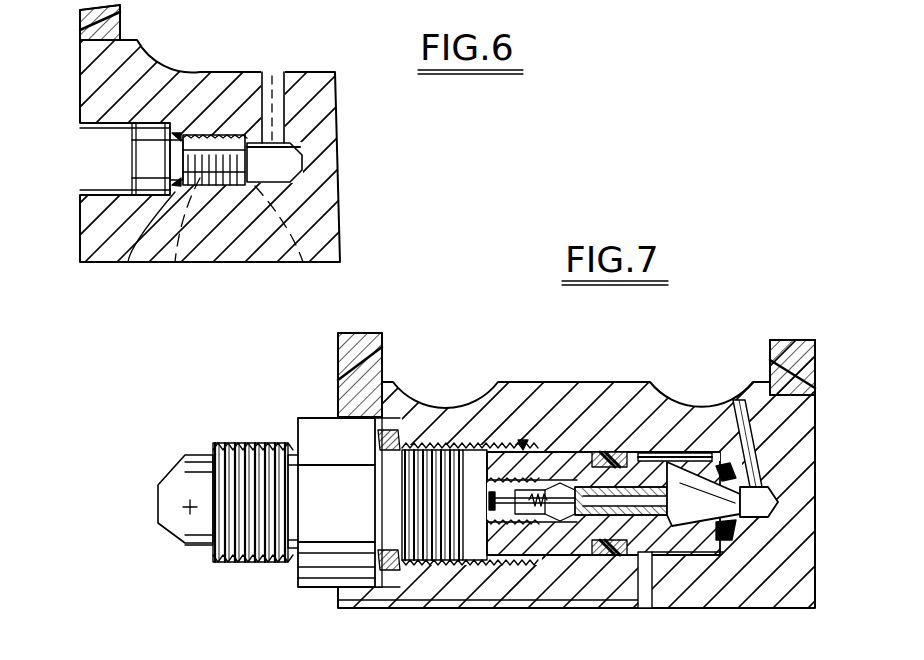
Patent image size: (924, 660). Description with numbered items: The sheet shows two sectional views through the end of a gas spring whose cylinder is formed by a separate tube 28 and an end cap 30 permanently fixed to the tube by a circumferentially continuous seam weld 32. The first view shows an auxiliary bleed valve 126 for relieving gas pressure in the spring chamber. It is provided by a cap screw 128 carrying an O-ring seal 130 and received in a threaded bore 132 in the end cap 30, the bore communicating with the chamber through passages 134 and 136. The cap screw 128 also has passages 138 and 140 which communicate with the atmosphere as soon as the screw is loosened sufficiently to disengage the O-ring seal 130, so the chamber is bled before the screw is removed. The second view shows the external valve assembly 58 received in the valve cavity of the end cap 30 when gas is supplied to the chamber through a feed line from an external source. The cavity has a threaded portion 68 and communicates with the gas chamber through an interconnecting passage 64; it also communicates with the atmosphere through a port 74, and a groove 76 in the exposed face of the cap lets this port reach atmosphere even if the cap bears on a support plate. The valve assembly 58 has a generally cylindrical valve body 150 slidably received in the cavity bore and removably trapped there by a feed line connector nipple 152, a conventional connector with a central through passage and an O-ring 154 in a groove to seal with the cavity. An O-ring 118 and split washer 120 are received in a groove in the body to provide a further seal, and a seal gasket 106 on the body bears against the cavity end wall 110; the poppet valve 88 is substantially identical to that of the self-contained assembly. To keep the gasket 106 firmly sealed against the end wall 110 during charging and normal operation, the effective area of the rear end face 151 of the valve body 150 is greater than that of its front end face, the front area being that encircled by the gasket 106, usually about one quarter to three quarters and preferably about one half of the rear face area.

In FIG. 6, the tube 28 is at (80, 40).
In FIG. 7, the tube 28 is at (340, 352).
In FIG. 6, the end cap 30 is at (335, 101).
In FIG. 7, the end cap 30 is at (826, 463).
In FIG. 7, the seam weld 32 is at (808, 378).
In FIG. 7, the external valve assembly 58 is at (522, 446).
In FIG. 7, the interconnecting passage 64 is at (740, 400).
In FIG. 7, the threaded portion 68 is at (487, 548).
In FIG. 7, the port 74 is at (645, 604).
In FIG. 7, the groove 76 is at (385, 597).
In FIG. 7, the poppet valve 88 is at (543, 520).
In FIG. 7, the seal gasket 106 is at (730, 531).
In FIG. 7, the cavity end wall 110 is at (697, 453).
In FIG. 7, the O-ring 118 is at (612, 452).
In FIG. 7, the split washer 120 is at (601, 452).
In FIG. 6, the auxiliary bleed valve 126 is at (226, 130).
In FIG. 6, the cap screw 128 is at (130, 160).
In FIG. 6, the O-ring seal 130 is at (128, 262).
In FIG. 6, the threaded bore 132 is at (193, 130).
In FIG. 6, the passage 134 is at (297, 157).
In FIG. 6, the passage 136 is at (278, 88).
In FIG. 6, the passage 138 is at (303, 262).
In FIG. 6, the passage 140 is at (169, 263).
In FIG. 7, the valve body 150 is at (547, 458).
In FIG. 7, the rear end face 151 is at (480, 462).
In FIG. 7, the feed line connector nipple 152 is at (315, 420).
In FIG. 7, the O-ring 154 is at (398, 560).